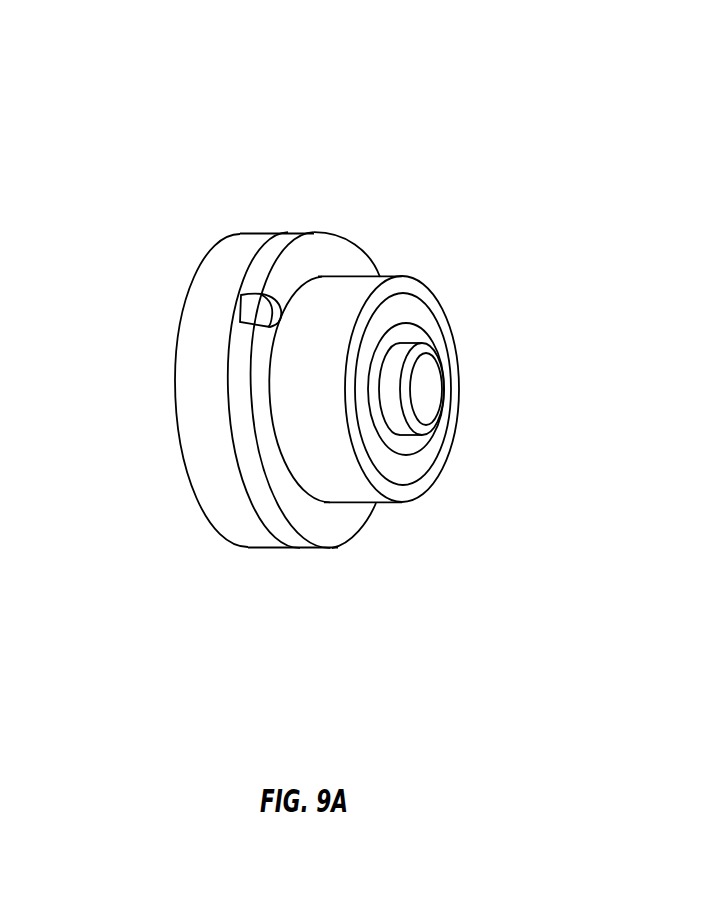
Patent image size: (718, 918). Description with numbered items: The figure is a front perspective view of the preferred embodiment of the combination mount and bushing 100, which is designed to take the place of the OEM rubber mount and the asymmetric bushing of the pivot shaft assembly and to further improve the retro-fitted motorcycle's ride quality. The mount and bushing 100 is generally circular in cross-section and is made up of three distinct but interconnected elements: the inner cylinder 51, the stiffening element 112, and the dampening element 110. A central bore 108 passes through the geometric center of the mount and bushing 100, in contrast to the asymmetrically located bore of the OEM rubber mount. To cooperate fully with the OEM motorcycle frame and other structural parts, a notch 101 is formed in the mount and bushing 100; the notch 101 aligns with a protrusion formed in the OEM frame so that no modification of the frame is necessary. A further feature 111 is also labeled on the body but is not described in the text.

The combination mount and bushing 100 is at (417, 377).
The notch 101 is at (274, 318).
The inner cylinder 51 is at (405, 341).
The central bore 108 is at (422, 392).
The dampening element 110 is at (205, 473).
The hub body 111 is at (352, 485).
The stiffening element 112 is at (303, 510).